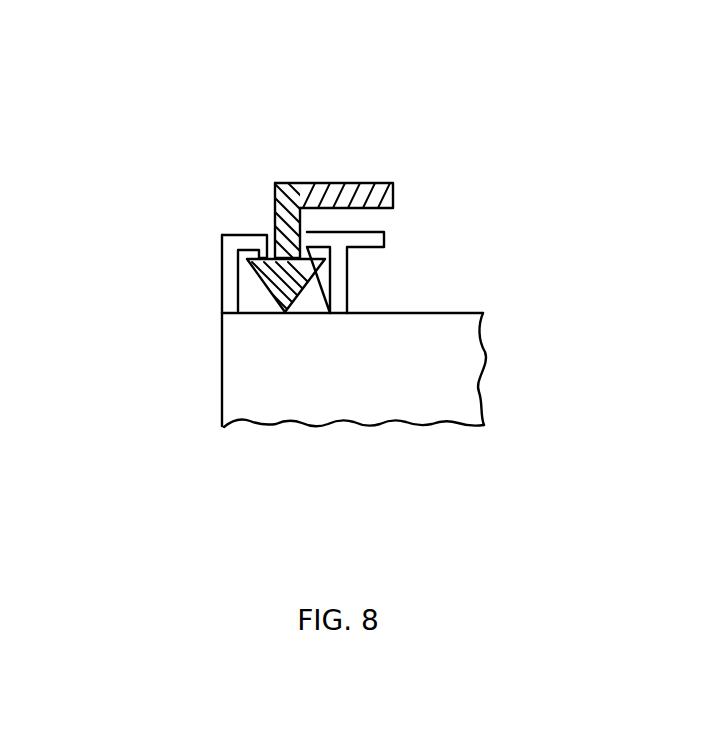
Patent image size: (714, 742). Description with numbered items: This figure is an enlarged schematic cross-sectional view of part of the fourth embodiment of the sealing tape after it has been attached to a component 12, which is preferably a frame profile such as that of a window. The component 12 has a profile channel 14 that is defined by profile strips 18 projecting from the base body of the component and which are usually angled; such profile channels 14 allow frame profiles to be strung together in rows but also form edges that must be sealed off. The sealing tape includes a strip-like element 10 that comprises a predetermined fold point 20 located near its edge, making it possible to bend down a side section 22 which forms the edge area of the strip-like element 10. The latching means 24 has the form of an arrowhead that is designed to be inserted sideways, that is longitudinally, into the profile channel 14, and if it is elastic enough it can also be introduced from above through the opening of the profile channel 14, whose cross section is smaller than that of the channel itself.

The strip-like element 10 is at (372, 190).
The component 12 is at (250, 391).
The profile channel 14 is at (252, 305).
The profile strip 18 is at (219, 277).
The predetermined fold point 20 is at (244, 153).
The side section 22 is at (281, 219).
The latching means 24 is at (294, 277).